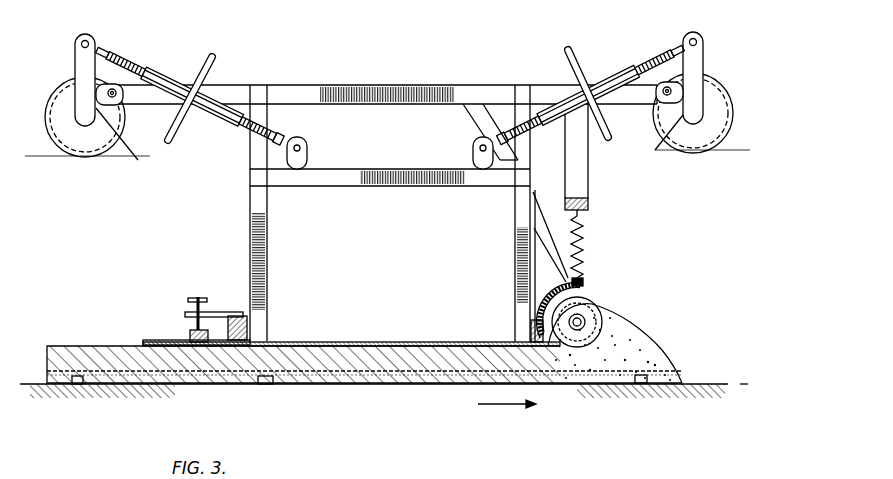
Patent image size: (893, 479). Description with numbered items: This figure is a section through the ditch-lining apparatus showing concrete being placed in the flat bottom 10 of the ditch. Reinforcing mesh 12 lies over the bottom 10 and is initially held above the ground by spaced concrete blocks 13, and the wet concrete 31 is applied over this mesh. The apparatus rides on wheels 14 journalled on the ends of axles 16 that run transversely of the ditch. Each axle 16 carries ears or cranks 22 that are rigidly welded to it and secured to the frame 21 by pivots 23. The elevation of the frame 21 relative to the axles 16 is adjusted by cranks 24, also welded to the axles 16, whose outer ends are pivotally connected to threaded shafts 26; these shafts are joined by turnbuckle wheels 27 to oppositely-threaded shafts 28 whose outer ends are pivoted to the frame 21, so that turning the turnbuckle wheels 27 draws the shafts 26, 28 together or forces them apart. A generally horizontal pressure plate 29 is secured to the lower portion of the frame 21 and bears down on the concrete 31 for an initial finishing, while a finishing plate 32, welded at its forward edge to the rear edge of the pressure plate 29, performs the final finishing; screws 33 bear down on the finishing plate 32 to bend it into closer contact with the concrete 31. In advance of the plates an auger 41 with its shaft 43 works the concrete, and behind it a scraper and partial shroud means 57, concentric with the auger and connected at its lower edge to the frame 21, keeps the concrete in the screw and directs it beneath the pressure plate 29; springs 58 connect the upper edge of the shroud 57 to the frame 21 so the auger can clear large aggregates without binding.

The flat bottom 10 is at (410, 373).
The reinforcing mesh 12 is at (128, 378).
The concrete blocks 13 is at (82, 380).
The wheels 14 is at (90, 147).
The axles 16 is at (122, 104).
The frame 21 is at (358, 85).
The ears or cranks 22 is at (389, 142).
The pivots 23 is at (122, 107).
The cranks 24 is at (78, 60).
The threaded shafts 26 is at (137, 62).
The turnbuckle wheels 27 is at (213, 60).
The oppositely-threaded shafts 28 is at (262, 133).
The pressure plate 29 is at (348, 340).
The wet concrete 31 is at (343, 360).
The finishing plate 32 is at (163, 345).
The screws 33 is at (218, 282).
The auger 41 is at (600, 298).
The shaft 43 is at (590, 312).
The scraper and partial shroud means 57 is at (540, 300).
The springs 58 is at (583, 242).